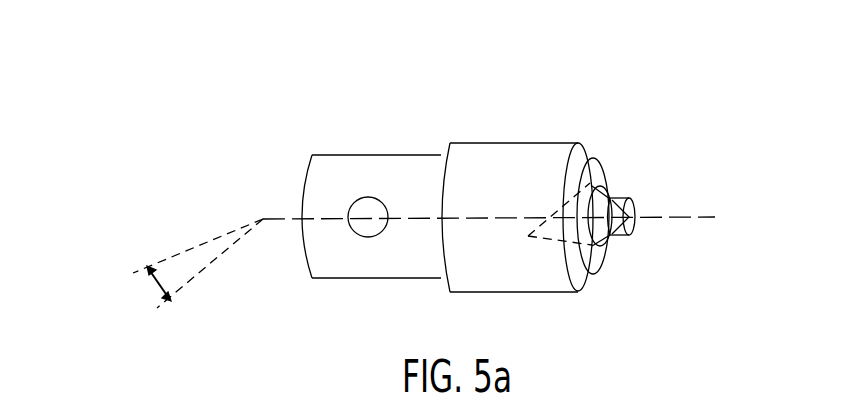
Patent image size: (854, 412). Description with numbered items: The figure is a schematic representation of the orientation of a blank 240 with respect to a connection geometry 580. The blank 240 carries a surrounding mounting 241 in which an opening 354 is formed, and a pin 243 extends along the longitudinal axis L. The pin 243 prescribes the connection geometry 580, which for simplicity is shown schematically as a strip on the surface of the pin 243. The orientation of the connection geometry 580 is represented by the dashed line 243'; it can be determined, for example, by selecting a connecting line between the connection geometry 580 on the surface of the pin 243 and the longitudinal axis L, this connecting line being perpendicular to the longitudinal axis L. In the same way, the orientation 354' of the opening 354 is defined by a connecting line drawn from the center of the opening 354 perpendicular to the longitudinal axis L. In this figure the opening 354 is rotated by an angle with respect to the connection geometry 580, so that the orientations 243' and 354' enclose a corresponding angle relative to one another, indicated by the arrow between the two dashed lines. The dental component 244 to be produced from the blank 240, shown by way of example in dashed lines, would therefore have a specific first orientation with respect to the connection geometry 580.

The blank 240 is at (560, 133).
The mounting 241 is at (358, 268).
The pin 243 is at (641, 246).
The orientation 243' is at (198, 227).
The dental component 244 is at (603, 172).
The opening 354 is at (374, 161).
The orientation 354' is at (210, 290).
The connection geometry 580 is at (629, 199).
The longitudinal axis L is at (683, 219).